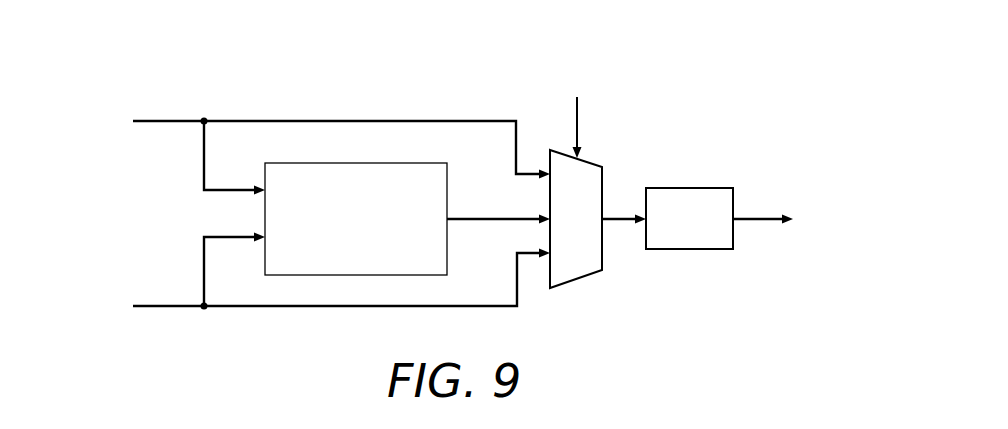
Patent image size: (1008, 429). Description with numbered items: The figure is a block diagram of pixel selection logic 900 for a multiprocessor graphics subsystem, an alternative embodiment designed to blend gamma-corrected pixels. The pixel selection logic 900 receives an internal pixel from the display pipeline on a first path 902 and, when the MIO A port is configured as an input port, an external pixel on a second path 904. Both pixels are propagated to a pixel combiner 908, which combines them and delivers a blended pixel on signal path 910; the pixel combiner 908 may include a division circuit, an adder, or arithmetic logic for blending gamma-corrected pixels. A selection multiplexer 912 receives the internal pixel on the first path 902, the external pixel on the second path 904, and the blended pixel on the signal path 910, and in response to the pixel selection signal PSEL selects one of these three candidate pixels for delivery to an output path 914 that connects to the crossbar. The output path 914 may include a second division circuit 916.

The pixel selection logic 900 is at (674, 110).
The first path 902 is at (257, 121).
The second path 904 is at (255, 306).
The pixel combiner 908 is at (393, 163).
The signal path 910 is at (523, 224).
The selection multiplexer 912 is at (577, 280).
The output path 914 is at (793, 253).
The second division circuit 916 is at (691, 188).